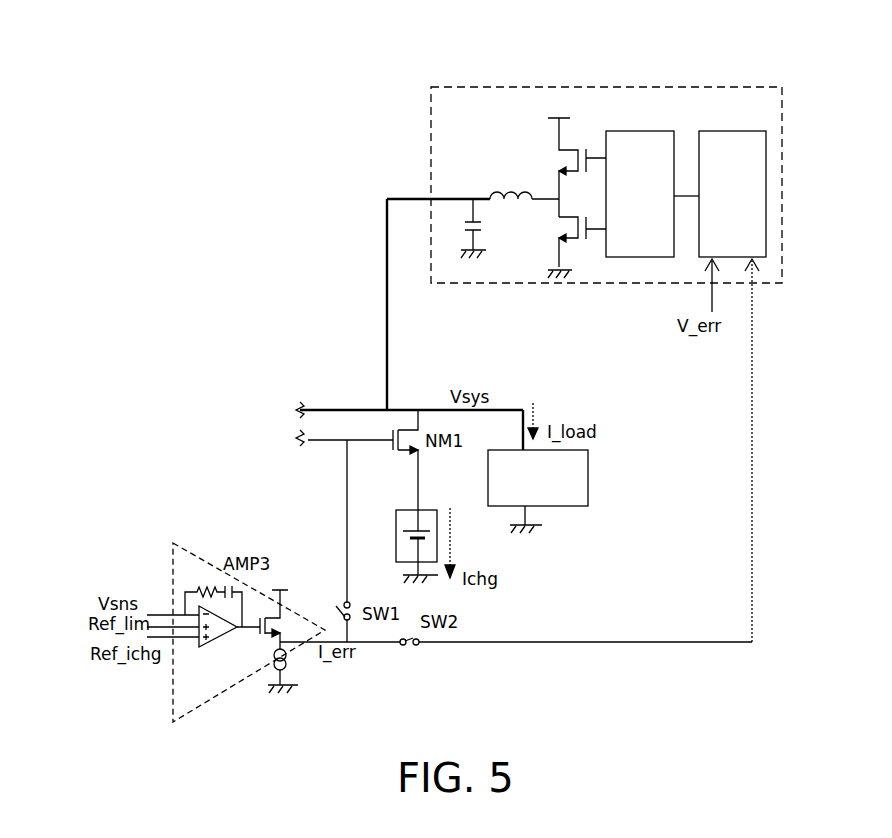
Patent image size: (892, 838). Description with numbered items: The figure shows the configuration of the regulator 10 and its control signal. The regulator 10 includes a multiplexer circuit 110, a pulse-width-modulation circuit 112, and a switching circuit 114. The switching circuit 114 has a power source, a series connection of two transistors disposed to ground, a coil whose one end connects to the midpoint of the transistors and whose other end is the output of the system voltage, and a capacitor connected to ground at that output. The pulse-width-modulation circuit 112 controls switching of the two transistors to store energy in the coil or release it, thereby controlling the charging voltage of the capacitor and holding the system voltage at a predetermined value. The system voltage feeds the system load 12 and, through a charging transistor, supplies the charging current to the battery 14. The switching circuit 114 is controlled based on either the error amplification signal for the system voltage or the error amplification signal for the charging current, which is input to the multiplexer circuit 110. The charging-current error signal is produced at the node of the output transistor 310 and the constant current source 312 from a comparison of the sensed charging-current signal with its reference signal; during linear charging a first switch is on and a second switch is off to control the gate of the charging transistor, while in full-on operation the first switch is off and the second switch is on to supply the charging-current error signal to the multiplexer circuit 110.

The regulator 10 is at (683, 86).
The switching circuit 114 is at (471, 139).
The PWM circuit 112 is at (637, 128).
The MUX circuit 110 is at (737, 128).
The battery 14 is at (420, 509).
The system load 12 is at (590, 478).
The output transistor 310 is at (262, 630).
The constant current source 312 is at (288, 663).